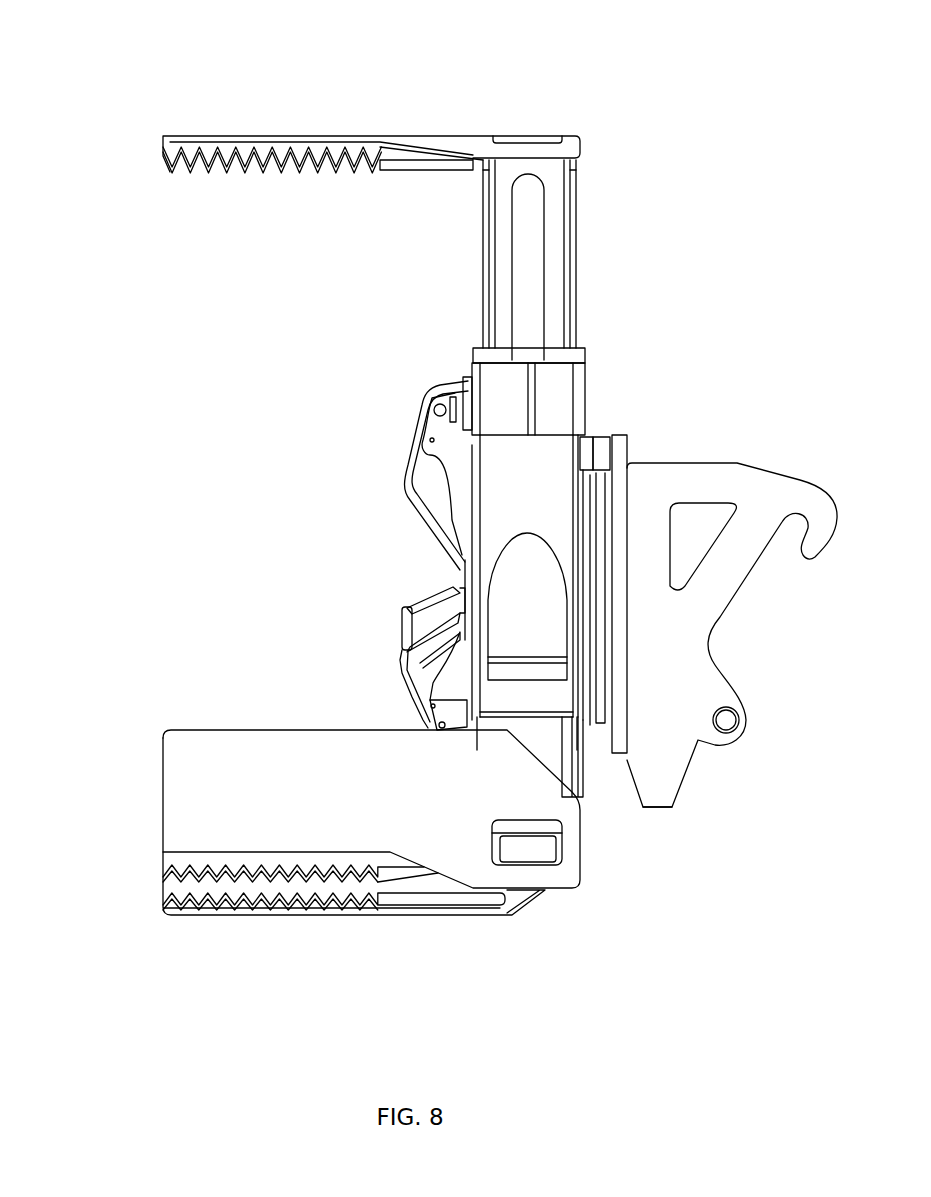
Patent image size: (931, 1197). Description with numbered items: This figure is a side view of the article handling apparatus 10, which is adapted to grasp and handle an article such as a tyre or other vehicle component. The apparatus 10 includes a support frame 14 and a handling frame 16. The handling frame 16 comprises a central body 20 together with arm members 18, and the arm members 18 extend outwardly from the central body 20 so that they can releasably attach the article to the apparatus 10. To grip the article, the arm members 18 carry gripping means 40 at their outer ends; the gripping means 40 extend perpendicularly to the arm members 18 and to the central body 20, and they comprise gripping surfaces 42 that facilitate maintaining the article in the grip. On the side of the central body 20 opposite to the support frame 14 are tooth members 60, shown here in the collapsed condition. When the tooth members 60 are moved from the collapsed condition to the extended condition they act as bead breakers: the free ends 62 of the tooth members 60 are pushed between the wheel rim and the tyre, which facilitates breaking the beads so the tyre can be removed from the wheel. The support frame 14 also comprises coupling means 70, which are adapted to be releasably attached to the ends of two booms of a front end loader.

The article handling apparatus 10 is at (630, 313).
The support frame 14 is at (683, 737).
The handling frame 16 is at (587, 772).
The arm members 18 is at (530, 255).
The central body 20 is at (463, 572).
The gripping means 40 is at (287, 138).
The gripping surfaces 42 is at (223, 165).
The tooth members 60 is at (422, 484).
The free ends 62 is at (460, 570).
The coupling means 70 is at (770, 510).